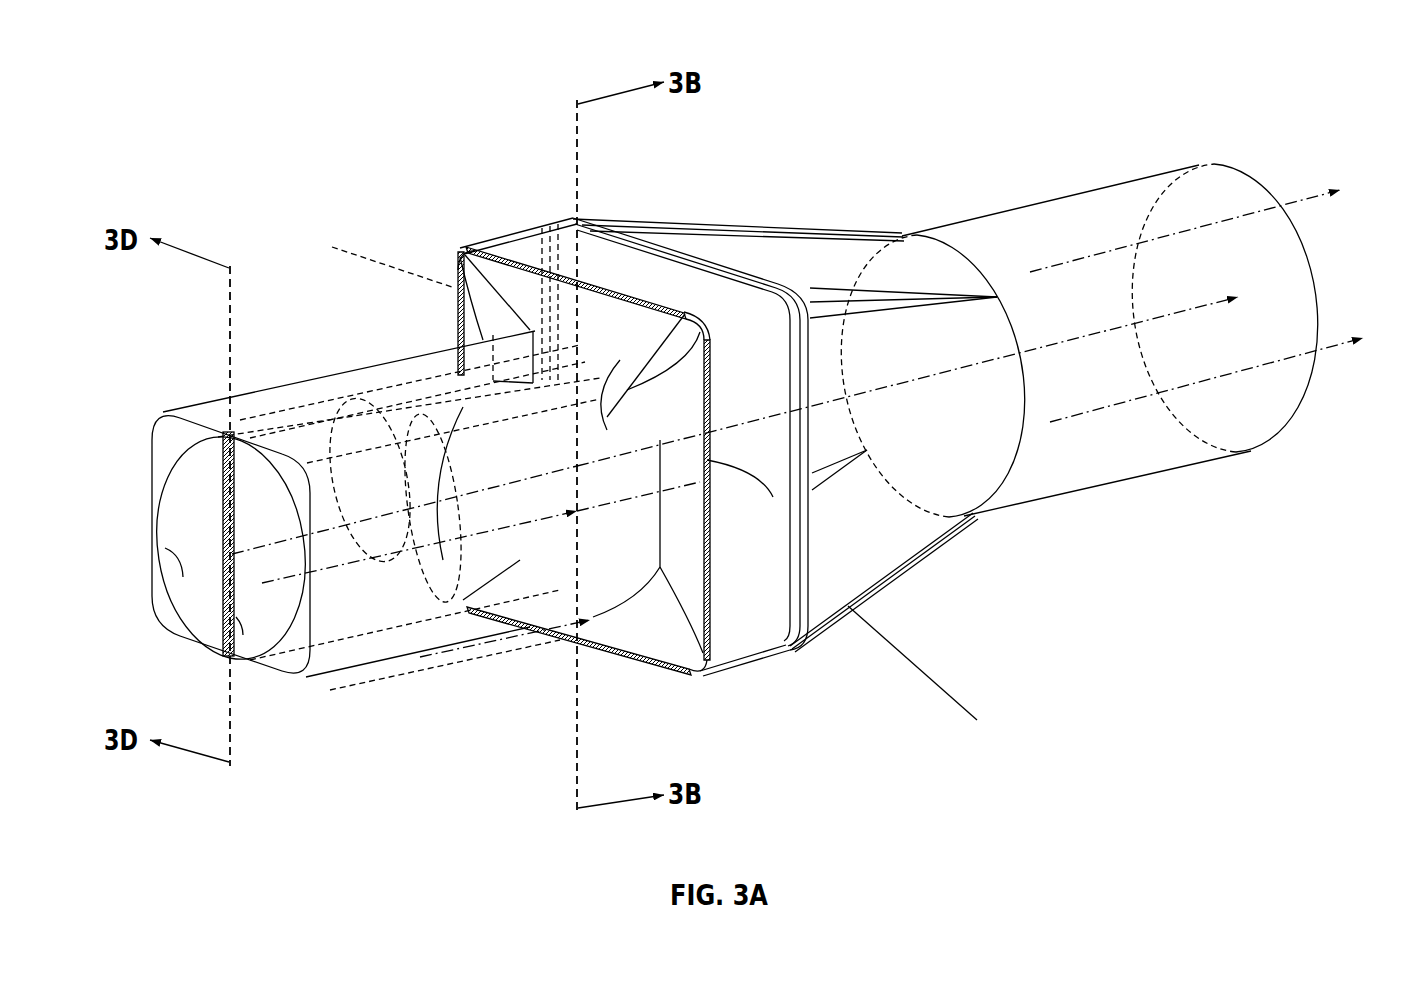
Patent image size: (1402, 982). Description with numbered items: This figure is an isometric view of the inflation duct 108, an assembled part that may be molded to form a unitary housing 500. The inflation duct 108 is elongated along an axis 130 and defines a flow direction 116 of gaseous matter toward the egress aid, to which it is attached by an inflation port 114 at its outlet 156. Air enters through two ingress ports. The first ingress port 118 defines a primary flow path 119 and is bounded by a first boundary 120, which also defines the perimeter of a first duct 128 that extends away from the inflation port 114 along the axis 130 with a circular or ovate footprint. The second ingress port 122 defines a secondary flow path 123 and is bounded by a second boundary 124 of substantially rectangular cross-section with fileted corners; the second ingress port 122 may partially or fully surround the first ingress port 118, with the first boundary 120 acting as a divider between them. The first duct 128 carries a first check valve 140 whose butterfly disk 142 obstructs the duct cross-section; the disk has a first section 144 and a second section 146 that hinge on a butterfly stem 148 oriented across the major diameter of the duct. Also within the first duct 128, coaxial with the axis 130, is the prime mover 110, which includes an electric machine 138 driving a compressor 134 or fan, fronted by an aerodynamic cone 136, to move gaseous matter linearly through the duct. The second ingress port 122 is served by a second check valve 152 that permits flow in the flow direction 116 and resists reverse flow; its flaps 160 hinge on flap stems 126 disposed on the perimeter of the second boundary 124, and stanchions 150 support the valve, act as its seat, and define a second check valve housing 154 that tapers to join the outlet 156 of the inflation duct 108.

The inflation duct 108 is at (818, 176).
The prime mover 110 is at (332, 366).
The inflation port 114 is at (1210, 163).
The flow direction 116 is at (1300, 200).
The first ingress port 118 is at (615, 385).
The primary flow path 119 is at (463, 410).
The first boundary 120 is at (712, 357).
The second ingress port 122 is at (600, 285).
The secondary flow path 123 is at (414, 275).
The second boundary 124 is at (656, 295).
The flap stems 126 is at (580, 250).
The first duct 128 is at (311, 266).
The axis 130 is at (1183, 303).
The compressor 134 is at (350, 447).
The aerodynamic cone 136 is at (345, 525).
The electric machine 138 is at (568, 440).
The first check valve 140 is at (177, 432).
The butterfly disk 142 is at (189, 476).
The first section 144 is at (166, 548).
The second section 146 is at (228, 606).
The butterfly stem 148 is at (224, 435).
The stanchions 150 is at (460, 257).
The second check valve 152 is at (457, 236).
The second check valve housing 154 is at (527, 215).
The outlet 156 is at (1052, 197).
The flaps 160 is at (770, 648).
The housing 500 is at (964, 695).